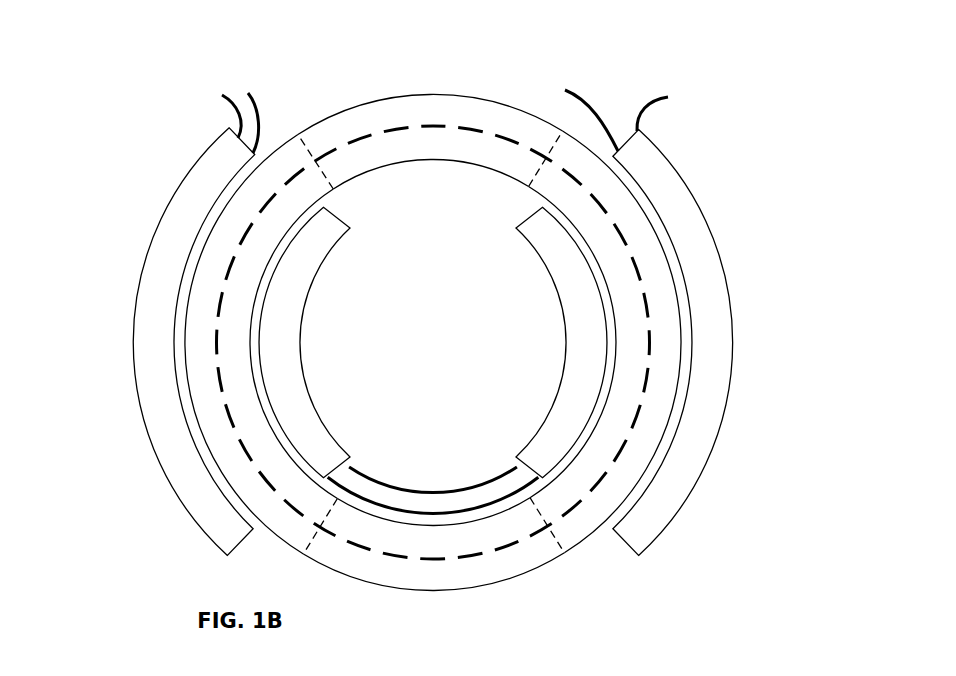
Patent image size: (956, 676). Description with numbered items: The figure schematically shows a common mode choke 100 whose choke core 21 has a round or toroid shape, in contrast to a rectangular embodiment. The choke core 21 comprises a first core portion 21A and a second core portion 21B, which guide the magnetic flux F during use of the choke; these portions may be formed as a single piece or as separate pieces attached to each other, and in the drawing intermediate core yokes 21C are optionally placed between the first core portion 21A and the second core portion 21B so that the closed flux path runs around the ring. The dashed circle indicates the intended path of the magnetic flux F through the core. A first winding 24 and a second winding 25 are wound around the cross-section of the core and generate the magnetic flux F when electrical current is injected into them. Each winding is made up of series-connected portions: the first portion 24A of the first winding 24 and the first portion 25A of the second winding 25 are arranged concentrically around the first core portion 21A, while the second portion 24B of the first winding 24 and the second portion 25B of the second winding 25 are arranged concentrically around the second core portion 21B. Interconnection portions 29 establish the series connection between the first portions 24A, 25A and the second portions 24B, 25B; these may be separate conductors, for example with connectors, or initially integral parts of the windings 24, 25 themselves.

The device / ring assembly 100 is at (157, 125).
The choke core 21 is at (405, 70).
The first core portion 21A is at (283, 533).
The second core portion 21B is at (582, 530).
The intermediate core yoke 21C is at (452, 97).
The magnetic flux F is at (393, 128).
The first winding 24 is at (222, 100).
The second winding 25 is at (250, 93).
The first portion of the first winding 24A is at (221, 342).
The first portion of the second winding 25A is at (337, 345).
The second portion of the first winding 24B is at (653, 343).
The second portion of the second winding 25B is at (545, 337).
The interconnection portion 29 is at (447, 468).